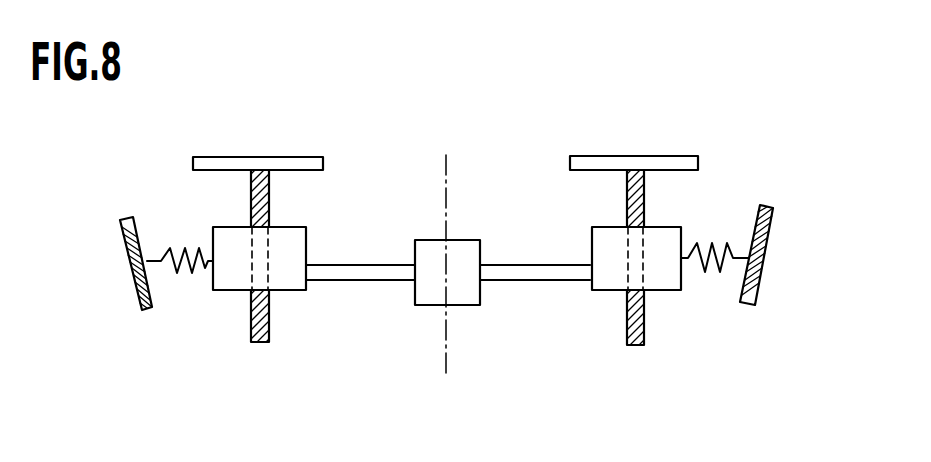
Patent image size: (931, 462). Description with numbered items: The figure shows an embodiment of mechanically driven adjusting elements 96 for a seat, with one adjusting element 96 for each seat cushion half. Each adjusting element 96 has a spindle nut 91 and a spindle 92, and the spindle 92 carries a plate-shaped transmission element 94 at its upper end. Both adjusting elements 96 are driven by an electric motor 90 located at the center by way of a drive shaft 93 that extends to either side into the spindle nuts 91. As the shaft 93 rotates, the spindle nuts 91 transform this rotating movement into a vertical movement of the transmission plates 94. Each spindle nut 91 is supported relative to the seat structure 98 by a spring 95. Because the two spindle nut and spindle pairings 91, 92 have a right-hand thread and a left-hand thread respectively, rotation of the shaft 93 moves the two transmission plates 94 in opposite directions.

The electric motor 90 is at (460, 288).
The spindle nut 91 is at (240, 278).
The spindle 92 is at (270, 201).
The drive shaft 93 is at (367, 272).
The plate-shaped transmission element 94 is at (230, 163).
The spring 95 is at (172, 245).
The adjusting element 96 is at (281, 124).
The seat structure 98 is at (127, 244).